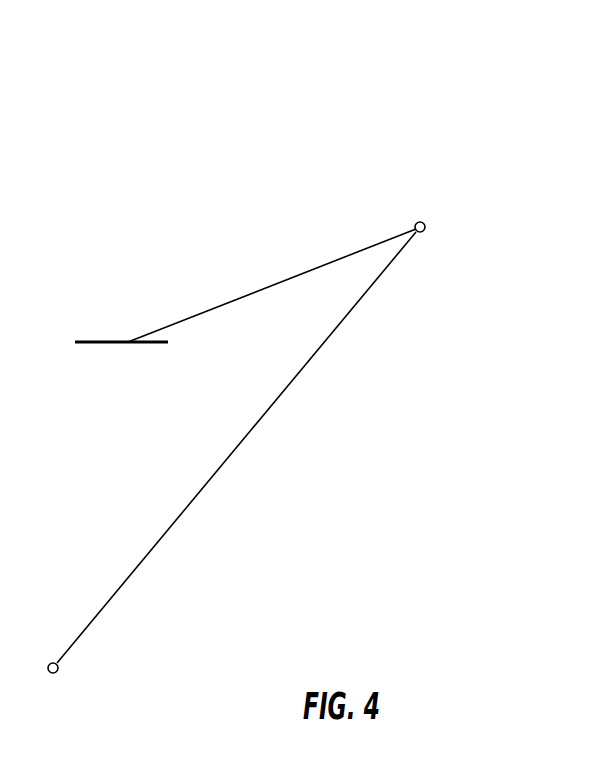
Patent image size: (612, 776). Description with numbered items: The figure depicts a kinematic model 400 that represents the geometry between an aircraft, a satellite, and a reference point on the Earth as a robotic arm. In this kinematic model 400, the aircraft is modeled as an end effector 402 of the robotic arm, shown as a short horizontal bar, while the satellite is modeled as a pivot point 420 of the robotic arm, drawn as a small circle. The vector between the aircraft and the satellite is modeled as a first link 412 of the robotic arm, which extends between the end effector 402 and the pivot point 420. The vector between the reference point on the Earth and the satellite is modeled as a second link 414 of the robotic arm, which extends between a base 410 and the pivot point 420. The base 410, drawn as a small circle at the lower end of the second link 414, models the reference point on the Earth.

The kinematic model 400 is at (176, 104).
The end effector 402 is at (112, 343).
The base 410 is at (58, 668).
The first link 412 is at (254, 290).
The second link 414 is at (298, 377).
The pivot point 420 is at (425, 221).